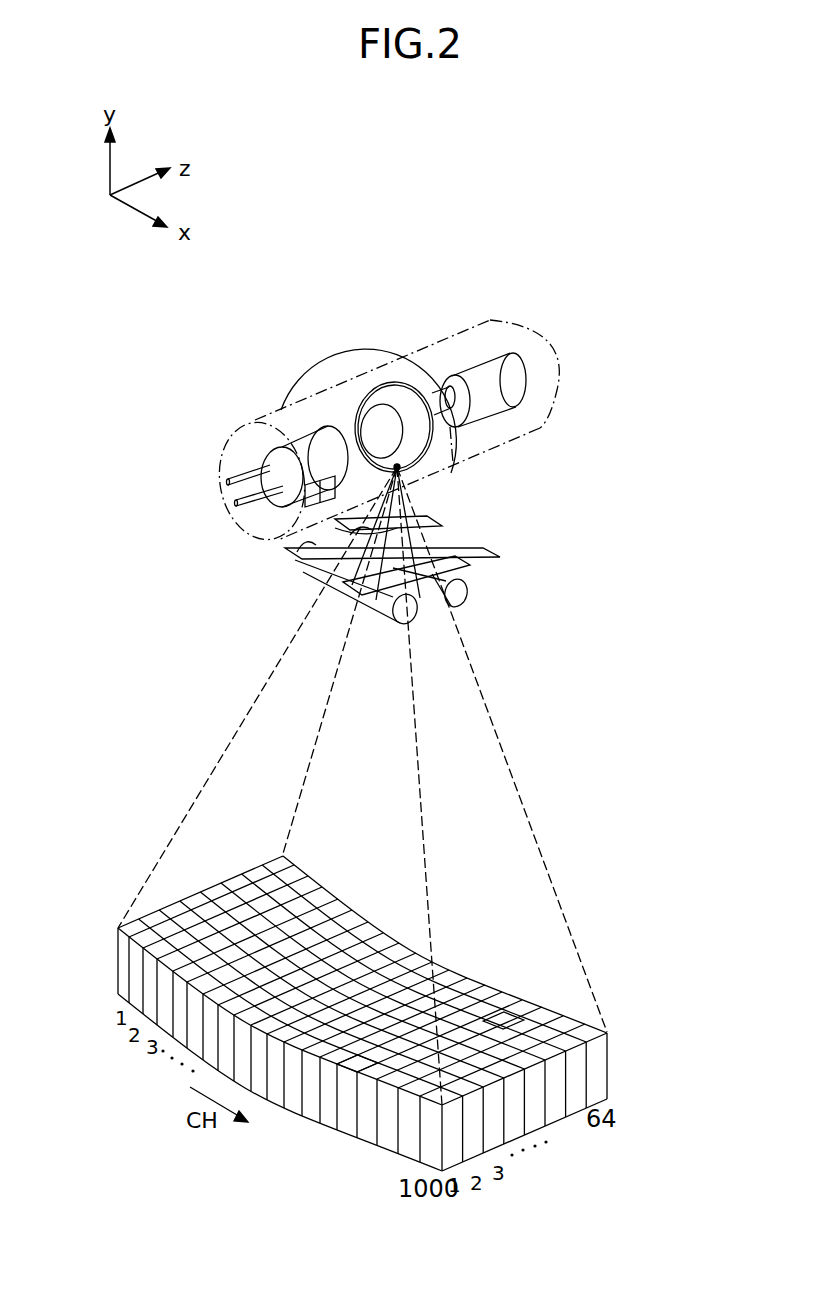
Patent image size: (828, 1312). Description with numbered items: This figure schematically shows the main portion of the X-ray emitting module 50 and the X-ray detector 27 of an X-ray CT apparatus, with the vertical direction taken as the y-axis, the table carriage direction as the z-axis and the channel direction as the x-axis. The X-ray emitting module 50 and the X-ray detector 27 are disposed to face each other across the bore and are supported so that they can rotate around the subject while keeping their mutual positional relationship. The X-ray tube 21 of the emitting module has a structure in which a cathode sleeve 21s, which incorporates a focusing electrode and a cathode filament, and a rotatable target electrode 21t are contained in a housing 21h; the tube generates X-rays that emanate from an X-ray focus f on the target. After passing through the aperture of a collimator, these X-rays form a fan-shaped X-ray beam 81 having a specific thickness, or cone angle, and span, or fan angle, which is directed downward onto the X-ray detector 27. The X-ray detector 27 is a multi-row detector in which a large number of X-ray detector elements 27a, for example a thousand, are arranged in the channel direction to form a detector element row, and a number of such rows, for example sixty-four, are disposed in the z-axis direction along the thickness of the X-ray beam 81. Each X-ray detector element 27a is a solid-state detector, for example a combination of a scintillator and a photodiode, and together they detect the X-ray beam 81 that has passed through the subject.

The X-ray emitting module 50 is at (440, 284).
The X-ray tube 21 is at (344, 314).
The rotatable target electrode 21t is at (388, 384).
The cathode sleeve 21s is at (305, 443).
The housing 21h is at (548, 350).
The X-ray focus f is at (412, 466).
The X-ray beam 81 is at (490, 714).
The X-ray detector 27 is at (576, 1148).
The X-ray detector element 27a is at (343, 957).